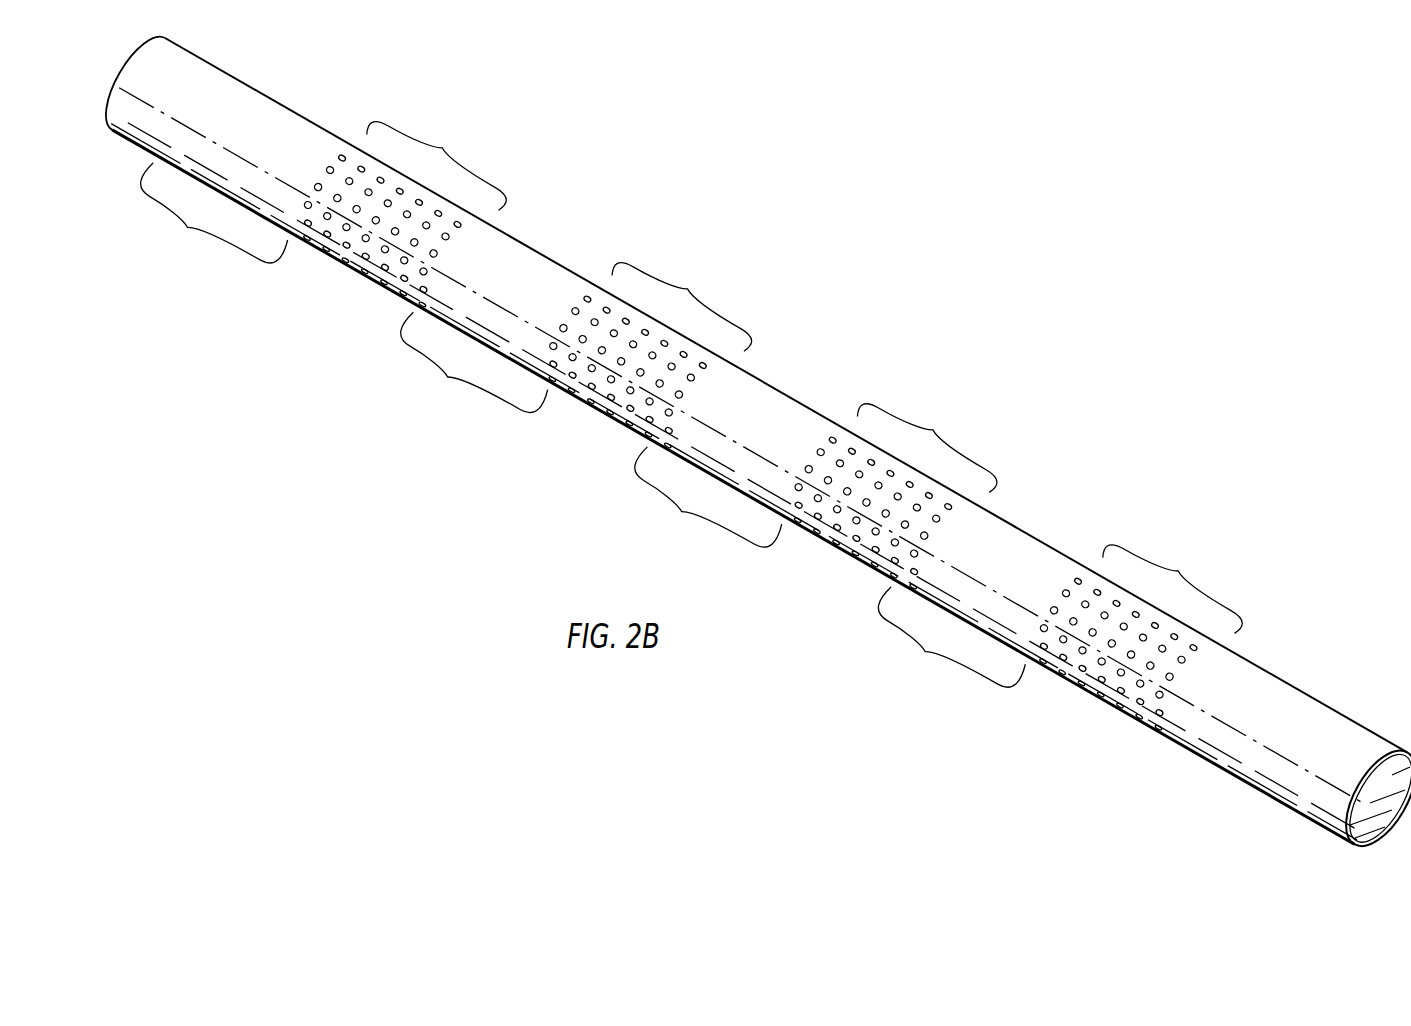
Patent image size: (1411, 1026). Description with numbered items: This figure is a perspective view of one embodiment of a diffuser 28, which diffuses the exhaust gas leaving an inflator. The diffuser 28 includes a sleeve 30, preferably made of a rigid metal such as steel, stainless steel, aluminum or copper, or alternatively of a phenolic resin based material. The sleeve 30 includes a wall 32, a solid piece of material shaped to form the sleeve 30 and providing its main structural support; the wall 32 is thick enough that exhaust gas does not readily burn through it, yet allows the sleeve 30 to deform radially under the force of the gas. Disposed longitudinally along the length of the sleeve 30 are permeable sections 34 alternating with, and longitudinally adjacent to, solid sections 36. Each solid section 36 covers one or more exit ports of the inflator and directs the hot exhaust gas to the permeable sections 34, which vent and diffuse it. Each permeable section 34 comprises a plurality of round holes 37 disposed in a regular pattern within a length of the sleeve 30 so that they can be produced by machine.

The diffuser 28 is at (941, 239).
The sleeve 30 is at (845, 368).
The wall 32 is at (1368, 857).
The permeable section 34 is at (784, 429).
The solid section 36 is at (580, 430).
The hole 37 is at (784, 449).